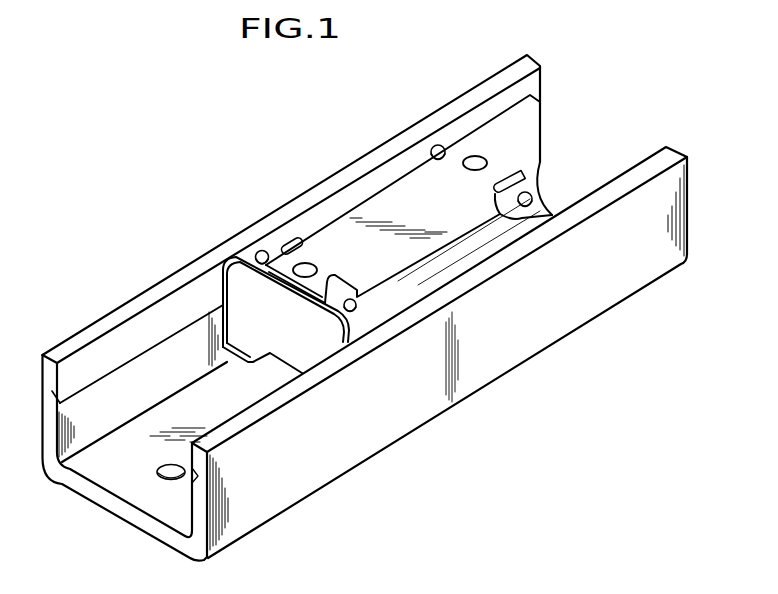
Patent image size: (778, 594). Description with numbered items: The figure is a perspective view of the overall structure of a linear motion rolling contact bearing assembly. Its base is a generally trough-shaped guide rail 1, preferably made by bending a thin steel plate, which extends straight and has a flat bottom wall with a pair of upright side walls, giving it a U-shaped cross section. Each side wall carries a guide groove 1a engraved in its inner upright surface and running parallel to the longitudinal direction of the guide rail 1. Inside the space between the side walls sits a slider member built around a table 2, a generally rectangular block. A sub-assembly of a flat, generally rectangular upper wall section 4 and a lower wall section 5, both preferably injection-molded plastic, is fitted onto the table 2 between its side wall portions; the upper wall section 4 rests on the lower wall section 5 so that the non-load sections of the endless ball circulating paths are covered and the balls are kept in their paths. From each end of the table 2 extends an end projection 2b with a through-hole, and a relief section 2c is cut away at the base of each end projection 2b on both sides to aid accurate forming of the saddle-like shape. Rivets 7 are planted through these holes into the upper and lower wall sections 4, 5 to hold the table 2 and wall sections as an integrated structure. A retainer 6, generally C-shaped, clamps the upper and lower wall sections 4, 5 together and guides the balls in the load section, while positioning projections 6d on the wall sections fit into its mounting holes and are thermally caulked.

The guide rail 1 is at (277, 458).
The guide groove 1a is at (88, 380).
The table 2 is at (362, 220).
The end projection 2b is at (287, 256).
The relief section 2c is at (523, 183).
The upper wall section 4 is at (232, 262).
The lower wall section 5 is at (320, 345).
The retainer 6 is at (450, 268).
The positioning projection 6d is at (436, 148).
The rivet 7 is at (305, 265).